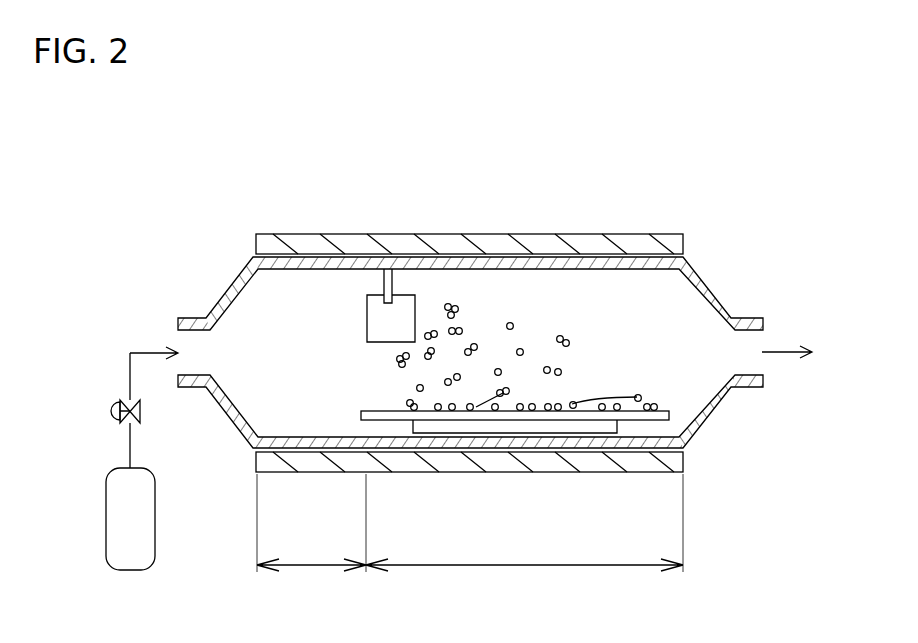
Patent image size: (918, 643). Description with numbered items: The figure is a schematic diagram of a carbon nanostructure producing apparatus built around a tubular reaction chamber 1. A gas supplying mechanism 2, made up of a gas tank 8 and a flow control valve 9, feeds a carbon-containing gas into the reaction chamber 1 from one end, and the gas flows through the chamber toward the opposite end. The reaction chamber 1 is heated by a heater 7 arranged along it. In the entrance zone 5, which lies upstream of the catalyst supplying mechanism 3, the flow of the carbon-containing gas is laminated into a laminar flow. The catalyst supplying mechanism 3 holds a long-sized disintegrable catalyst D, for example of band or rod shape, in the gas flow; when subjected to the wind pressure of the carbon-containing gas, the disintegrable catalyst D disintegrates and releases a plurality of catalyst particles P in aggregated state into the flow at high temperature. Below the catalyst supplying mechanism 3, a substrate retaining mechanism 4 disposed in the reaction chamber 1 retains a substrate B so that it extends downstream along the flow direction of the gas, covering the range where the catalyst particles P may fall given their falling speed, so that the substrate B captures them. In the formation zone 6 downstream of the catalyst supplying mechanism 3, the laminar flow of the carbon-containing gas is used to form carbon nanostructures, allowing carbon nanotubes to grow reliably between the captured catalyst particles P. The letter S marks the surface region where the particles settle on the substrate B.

The reaction chamber 1 is at (658, 232).
The gas supplying mechanism 2 is at (130, 343).
The catalyst supplying mechanism 3 is at (397, 288).
The substrate retaining mechanism 4 is at (343, 429).
The entrance zone 5 is at (311, 523).
The formation zone 6 is at (524, 523).
The heater 7 is at (450, 473).
The gas tank 8 is at (156, 517).
The flow control valve 9 is at (141, 414).
The disintegrable catalyst D is at (368, 292).
The catalyst particles P is at (510, 322).
The substrate S is at (485, 400).
The substrate B is at (643, 424).